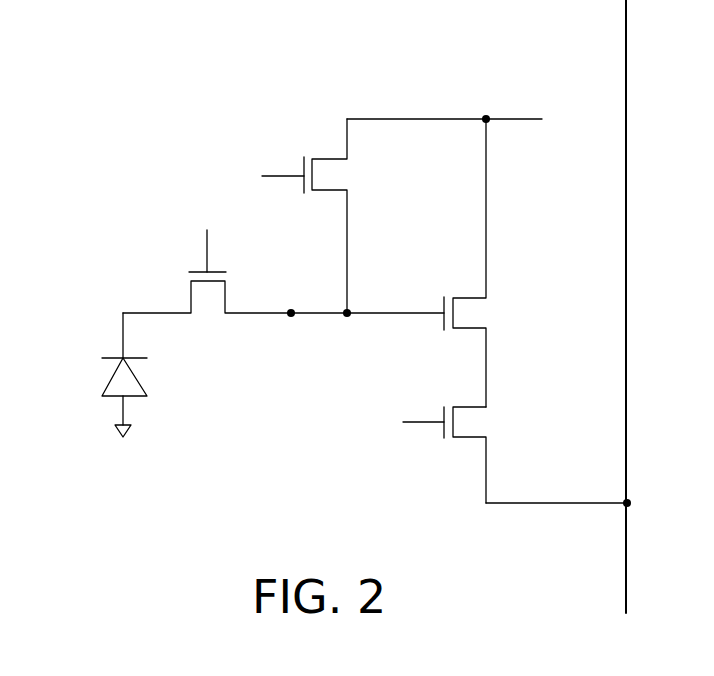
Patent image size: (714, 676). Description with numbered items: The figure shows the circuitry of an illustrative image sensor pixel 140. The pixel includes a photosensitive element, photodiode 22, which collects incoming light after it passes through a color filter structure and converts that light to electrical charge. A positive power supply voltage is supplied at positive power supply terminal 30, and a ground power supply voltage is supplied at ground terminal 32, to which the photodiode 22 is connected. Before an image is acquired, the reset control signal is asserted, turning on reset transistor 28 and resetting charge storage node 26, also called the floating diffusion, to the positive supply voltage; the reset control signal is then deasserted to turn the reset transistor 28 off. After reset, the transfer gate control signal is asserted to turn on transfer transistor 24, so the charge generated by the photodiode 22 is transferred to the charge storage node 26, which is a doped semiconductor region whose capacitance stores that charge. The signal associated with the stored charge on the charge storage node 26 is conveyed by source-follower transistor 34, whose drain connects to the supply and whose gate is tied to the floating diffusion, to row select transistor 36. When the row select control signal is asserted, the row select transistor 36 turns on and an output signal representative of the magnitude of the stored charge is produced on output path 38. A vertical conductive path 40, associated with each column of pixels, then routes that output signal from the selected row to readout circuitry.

The pixel 140 is at (146, 110).
The photodiode 22 is at (118, 380).
The transfer transistor 24 is at (196, 296).
The charge storage node 26 is at (291, 311).
The reset transistor 28 is at (330, 163).
The positive power supply terminal 30 is at (520, 118).
The ground terminal 32 is at (121, 436).
The source-follower transistor 34 is at (470, 300).
The row select transistor 36 is at (470, 410).
The output path 38 is at (548, 505).
The vertical conductive path 40 is at (627, 557).